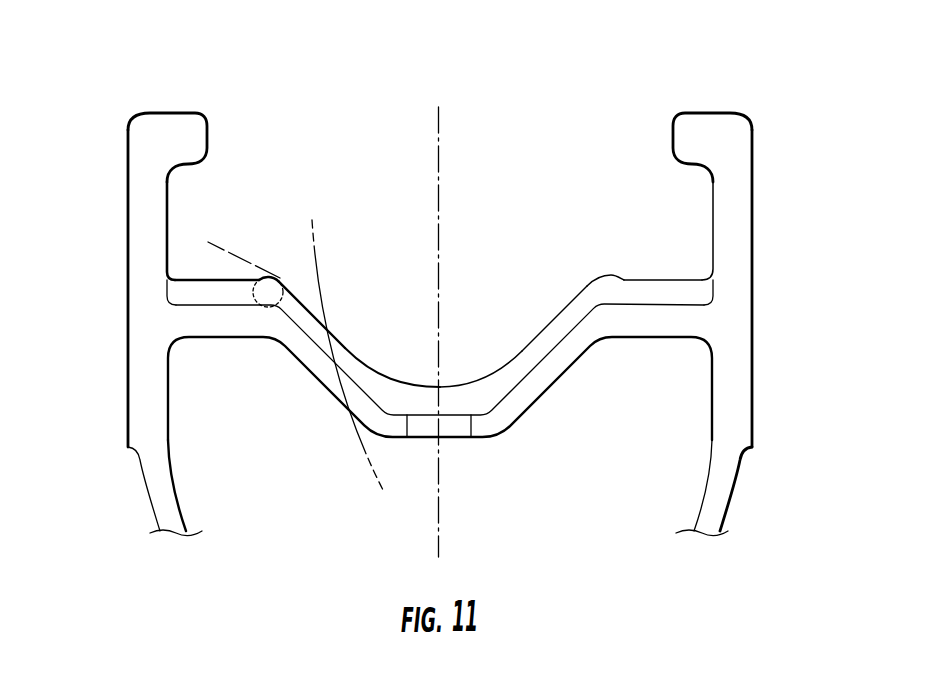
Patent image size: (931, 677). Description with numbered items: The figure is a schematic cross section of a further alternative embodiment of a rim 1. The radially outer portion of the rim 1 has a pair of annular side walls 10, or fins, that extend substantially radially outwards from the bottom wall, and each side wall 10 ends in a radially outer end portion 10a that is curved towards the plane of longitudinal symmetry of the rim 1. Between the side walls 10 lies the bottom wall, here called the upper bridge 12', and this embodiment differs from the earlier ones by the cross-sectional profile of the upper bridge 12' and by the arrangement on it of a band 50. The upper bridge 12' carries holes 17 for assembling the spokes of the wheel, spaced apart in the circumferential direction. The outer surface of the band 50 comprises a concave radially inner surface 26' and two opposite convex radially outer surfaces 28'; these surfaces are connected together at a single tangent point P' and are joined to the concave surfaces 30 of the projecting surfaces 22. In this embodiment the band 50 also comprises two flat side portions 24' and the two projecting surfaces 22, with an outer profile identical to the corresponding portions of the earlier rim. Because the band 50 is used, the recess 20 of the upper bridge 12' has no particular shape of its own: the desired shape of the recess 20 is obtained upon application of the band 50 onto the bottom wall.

The rim 1 is at (218, 78).
The annular side wall 10 is at (132, 186).
The radially outer end portion 10a is at (193, 140).
The upper bridge 12' is at (440, 392).
The hole 17 is at (453, 427).
The annular recess 20 is at (482, 247).
The projecting annular surface 22 is at (325, 188).
The flat side portion 24' is at (438, 243).
The concave radially inner surface 26' is at (481, 345).
The convex radially outer surface 28' is at (433, 298).
The concave surface 30 is at (281, 278).
The band 50 is at (381, 383).
The tangent point P' is at (347, 355).